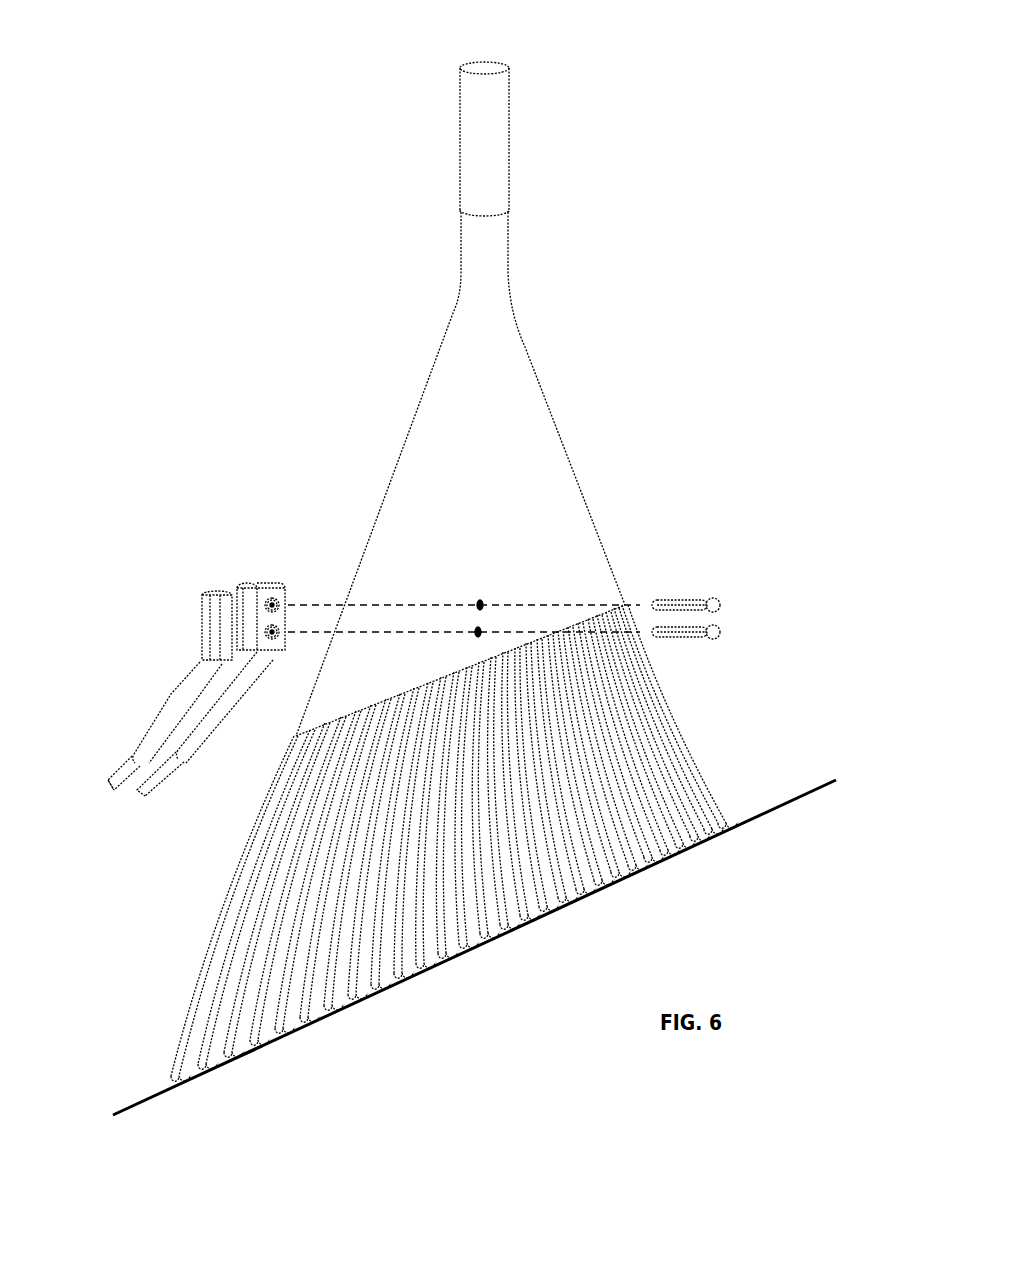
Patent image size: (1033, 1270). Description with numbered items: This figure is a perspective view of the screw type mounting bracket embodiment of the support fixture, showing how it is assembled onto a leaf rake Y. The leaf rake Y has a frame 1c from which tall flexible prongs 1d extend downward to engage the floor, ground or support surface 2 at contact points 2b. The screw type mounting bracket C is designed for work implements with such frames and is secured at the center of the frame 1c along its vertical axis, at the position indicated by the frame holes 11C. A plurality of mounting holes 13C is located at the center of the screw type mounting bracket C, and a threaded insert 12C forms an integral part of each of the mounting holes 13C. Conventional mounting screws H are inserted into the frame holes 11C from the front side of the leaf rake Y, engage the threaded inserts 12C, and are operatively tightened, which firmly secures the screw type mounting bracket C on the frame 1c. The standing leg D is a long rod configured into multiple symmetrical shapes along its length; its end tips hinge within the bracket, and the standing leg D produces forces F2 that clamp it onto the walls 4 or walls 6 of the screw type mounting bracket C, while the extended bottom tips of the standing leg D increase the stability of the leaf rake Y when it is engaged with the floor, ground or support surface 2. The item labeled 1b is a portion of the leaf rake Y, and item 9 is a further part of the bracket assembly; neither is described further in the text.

The leaf rake Y is at (590, 243).
The handle sleeve 1b is at (510, 108).
The frame 1c is at (527, 420).
The tall flexible prongs 1d is at (682, 753).
The floor, ground or support surface 2 is at (474, 947).
The contact points 2b is at (252, 1053).
The frame holes 11C is at (478, 628).
The mounting screws H is at (722, 608).
The screw type mounting bracket C is at (158, 570).
The walls 4 is at (260, 585).
The walls 6 is at (197, 678).
The second strip 9 is at (238, 620).
The threaded insert 12C is at (275, 597).
The mounting holes 13C is at (283, 600).
The forces F2 is at (126, 753).
The standing leg D is at (115, 796).